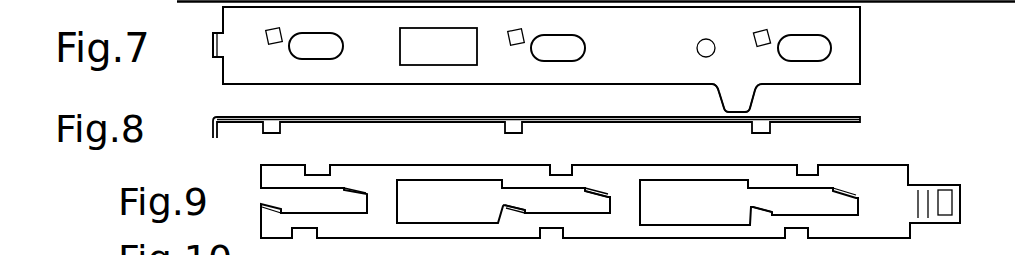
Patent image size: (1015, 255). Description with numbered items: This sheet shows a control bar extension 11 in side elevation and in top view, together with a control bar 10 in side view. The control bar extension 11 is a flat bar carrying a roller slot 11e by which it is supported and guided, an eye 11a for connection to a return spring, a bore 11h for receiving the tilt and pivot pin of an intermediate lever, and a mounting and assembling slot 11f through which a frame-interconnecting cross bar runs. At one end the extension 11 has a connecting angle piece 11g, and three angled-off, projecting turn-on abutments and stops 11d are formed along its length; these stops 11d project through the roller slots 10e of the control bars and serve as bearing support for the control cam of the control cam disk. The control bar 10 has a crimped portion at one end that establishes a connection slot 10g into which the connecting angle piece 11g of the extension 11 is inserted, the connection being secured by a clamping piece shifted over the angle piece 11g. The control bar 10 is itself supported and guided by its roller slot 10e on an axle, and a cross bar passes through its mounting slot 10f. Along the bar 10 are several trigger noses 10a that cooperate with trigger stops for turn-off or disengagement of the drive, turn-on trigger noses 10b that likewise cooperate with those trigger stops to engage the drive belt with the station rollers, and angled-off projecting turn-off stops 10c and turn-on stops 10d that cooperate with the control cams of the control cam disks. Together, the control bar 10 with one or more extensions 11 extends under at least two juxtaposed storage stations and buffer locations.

In FIG. 7, the control bar extension 11 is at (850, 53).
In FIG. 7, the eye 11a is at (740, 105).
In FIG. 7, the turn-on abutments and stops 11d is at (513, 44).
In FIG. 7, the roller slot 11e is at (566, 50).
In FIG. 7, the mounting and assembling slot 11f is at (432, 48).
In FIG. 7, the connecting angle piece 11g is at (213, 45).
In FIG. 7, the bore 11h is at (701, 55).
In FIG. 9, the control bar 10 is at (895, 178).
In FIG. 9, the trigger noses 10a is at (812, 168).
In FIG. 9, the turn-on trigger noses 10b is at (797, 228).
In FIG. 9, the turn-off stops 10c is at (602, 192).
In FIG. 9, the turn-on stops 10d is at (506, 212).
In FIG. 9, the roller slot 10e is at (575, 200).
In FIG. 9, the mounting slot 10f is at (420, 198).
In FIG. 9, the connection slot 10g is at (945, 202).